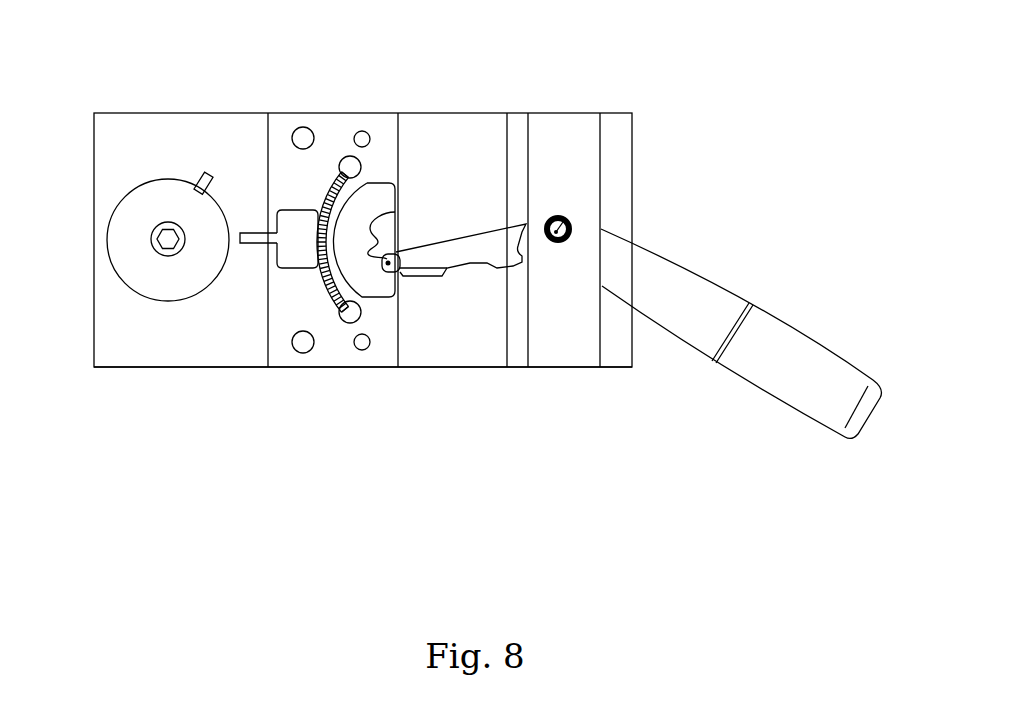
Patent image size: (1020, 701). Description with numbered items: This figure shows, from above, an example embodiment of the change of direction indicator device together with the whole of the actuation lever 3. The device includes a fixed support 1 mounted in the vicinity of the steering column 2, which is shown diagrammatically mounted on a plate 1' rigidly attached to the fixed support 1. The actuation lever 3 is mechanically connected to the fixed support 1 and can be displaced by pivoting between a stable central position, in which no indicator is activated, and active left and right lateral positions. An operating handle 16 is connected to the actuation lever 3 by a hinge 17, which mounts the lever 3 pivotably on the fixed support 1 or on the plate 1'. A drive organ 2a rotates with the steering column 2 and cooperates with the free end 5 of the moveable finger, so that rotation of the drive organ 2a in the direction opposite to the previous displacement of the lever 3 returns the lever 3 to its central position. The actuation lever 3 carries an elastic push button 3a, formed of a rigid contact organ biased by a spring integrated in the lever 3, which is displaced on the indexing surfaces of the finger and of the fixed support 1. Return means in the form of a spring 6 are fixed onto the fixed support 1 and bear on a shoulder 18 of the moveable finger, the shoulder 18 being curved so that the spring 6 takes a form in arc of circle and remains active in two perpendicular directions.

The fixed support 1 is at (363, 195).
The plate 1' is at (363, 419).
The steering column 2 is at (121, 289).
The drive organ 2a is at (205, 171).
The actuation lever 3 is at (465, 222).
The elastic push button 3a is at (390, 260).
The free end 5 is at (247, 243).
The spring 6 is at (328, 296).
The operating handle 16 is at (803, 352).
The hinge 17 is at (558, 224).
The shoulder 18 is at (332, 240).